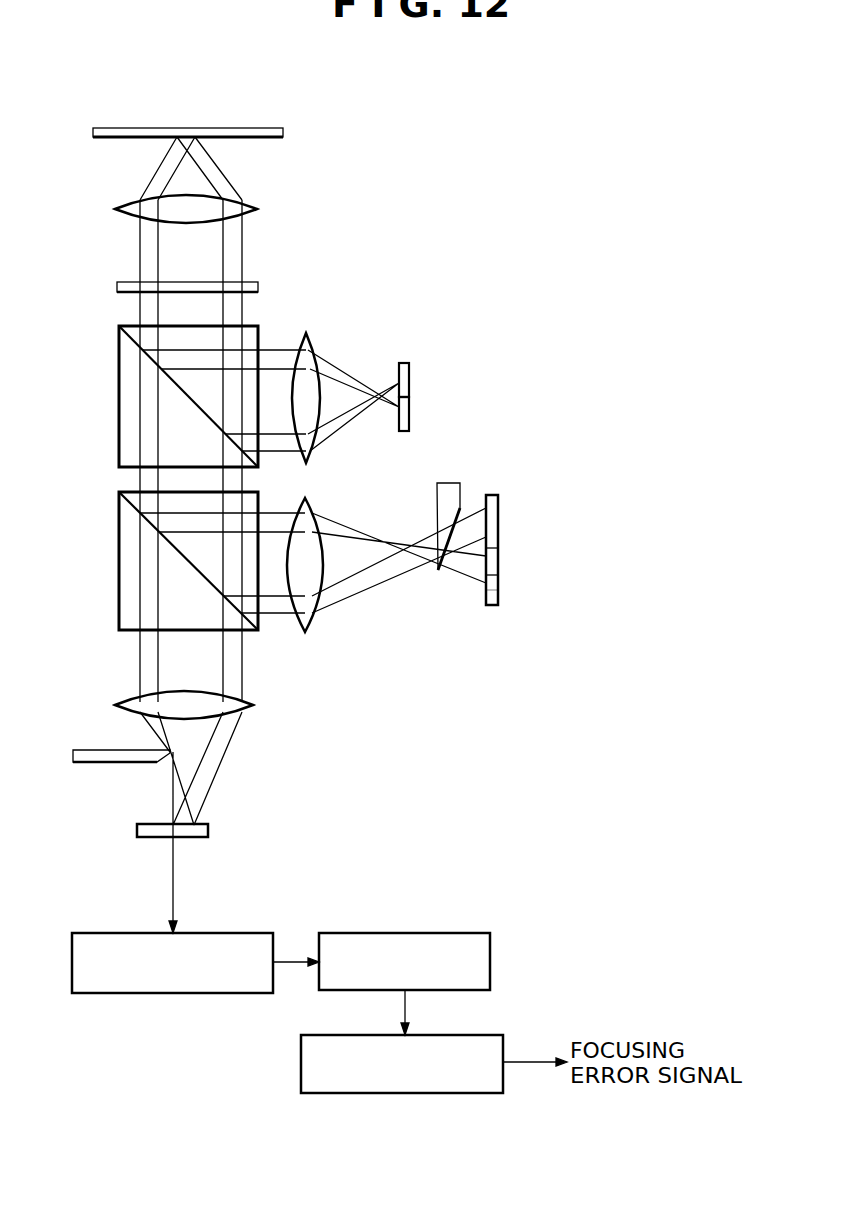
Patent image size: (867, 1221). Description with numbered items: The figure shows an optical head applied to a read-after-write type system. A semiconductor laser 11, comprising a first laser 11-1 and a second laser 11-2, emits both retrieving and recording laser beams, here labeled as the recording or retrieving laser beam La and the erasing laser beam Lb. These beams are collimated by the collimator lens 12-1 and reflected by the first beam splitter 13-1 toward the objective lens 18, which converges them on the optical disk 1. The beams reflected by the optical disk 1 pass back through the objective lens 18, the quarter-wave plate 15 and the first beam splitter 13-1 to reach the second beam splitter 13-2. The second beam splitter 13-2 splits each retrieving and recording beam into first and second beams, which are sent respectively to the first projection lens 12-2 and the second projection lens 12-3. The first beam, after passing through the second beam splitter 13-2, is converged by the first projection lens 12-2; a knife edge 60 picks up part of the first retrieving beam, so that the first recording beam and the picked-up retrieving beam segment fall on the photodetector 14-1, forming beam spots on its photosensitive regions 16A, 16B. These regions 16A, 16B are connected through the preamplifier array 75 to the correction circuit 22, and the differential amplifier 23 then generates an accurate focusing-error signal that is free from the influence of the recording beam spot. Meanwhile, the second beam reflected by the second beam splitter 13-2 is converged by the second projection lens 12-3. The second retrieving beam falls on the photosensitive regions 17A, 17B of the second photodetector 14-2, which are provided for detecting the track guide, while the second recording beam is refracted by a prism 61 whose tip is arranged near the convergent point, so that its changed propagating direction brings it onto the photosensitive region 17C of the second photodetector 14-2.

The optical disk 1 is at (253, 128).
The objective lens 18 is at (258, 209).
The quarter-wave plate 15 is at (259, 290).
The first beam splitter 13-1 is at (119, 398).
The collimator lens 12-1 is at (307, 333).
The recording or retrieving laser beam La is at (345, 362).
The erasing laser beam Lb is at (350, 432).
The semiconductor laser 11 is at (412, 389).
The first laser 11-1 is at (400, 363).
The second laser 11-2 is at (398, 431).
The prism 61 is at (453, 487).
The second beam splitter 13-2 is at (119, 556).
The second projection lens 12-3 is at (309, 626).
The second photodetector 14-2 is at (519, 571).
The photosensitive region 17A is at (498, 590).
The photosensitive region 17B is at (498, 560).
The photosensitive region 17C is at (498, 512).
The first projection lens 12-2 is at (125, 700).
The knife edge 60 is at (102, 752).
The photodetector 14-1 is at (195, 840).
The photosensitive region 16A is at (152, 838).
The photosensitive region 16B is at (190, 838).
The preamplifier array 75 is at (211, 933).
The correction circuit 22 is at (401, 933).
The differential amplifier 23 is at (466, 1035).